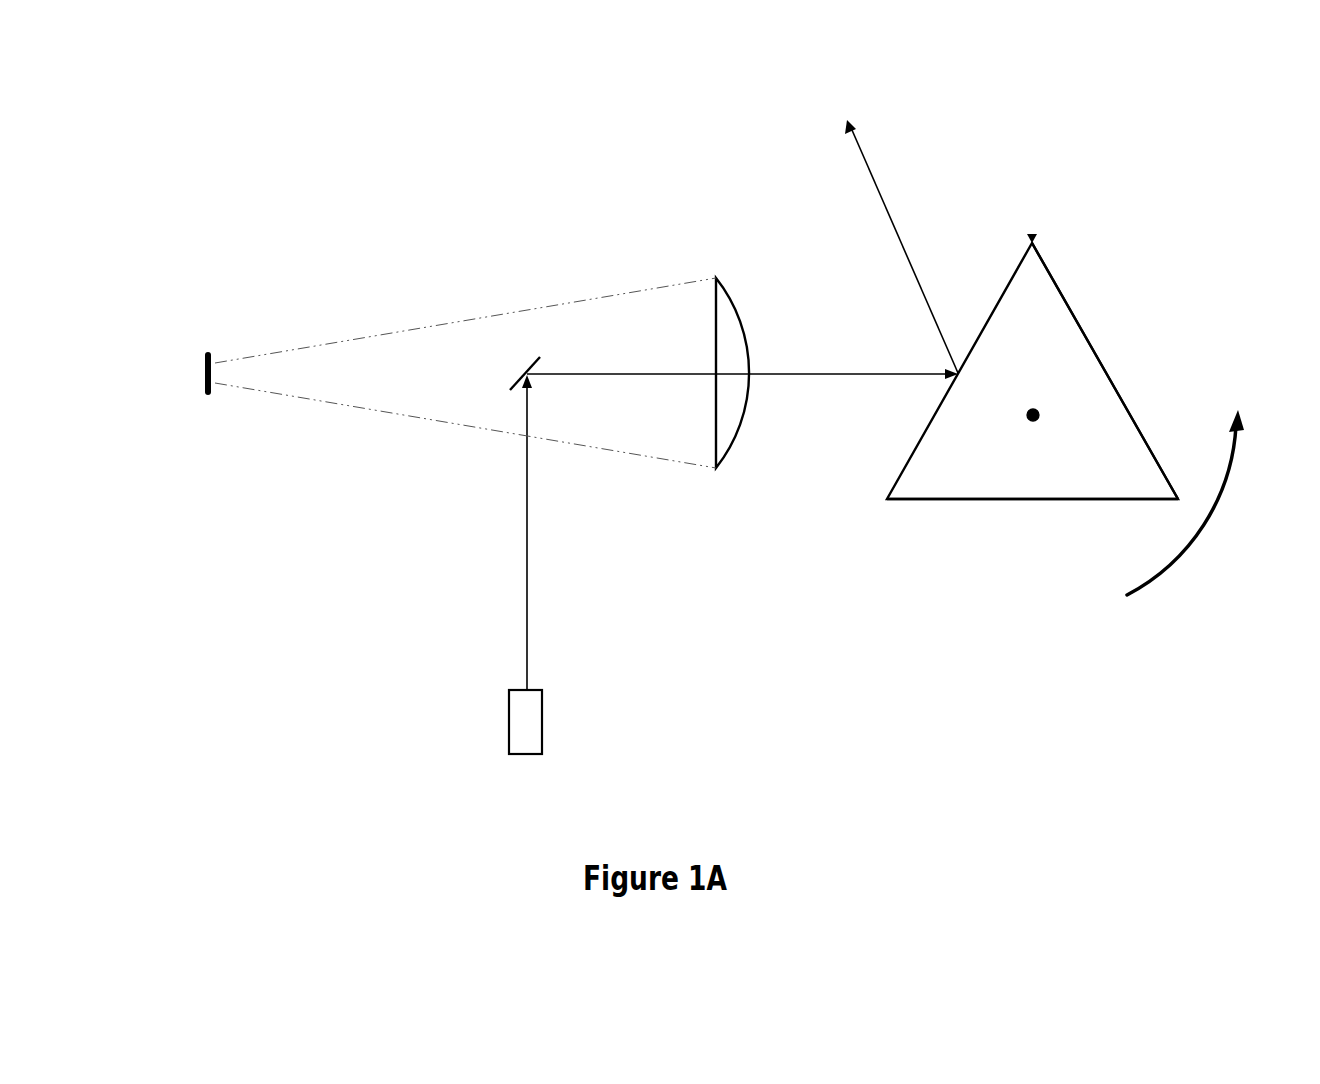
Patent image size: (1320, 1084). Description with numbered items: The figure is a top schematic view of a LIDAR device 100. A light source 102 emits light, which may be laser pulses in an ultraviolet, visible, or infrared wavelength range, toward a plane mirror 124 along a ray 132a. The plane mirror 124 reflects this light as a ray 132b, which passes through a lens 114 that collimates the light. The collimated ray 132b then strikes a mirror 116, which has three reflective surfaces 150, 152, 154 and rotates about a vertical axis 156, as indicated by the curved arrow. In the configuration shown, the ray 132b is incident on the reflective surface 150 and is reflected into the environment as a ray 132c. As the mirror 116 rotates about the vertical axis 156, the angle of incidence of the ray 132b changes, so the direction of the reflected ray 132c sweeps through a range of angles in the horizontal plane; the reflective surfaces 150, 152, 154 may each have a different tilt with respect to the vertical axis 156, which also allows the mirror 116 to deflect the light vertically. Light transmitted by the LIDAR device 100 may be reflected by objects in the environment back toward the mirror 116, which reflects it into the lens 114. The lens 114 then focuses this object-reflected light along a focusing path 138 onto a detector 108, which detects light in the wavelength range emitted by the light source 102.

The LIDAR device 100 is at (1050, 748).
The light source 102 is at (508, 723).
The detector 108 is at (203, 373).
The lens 114 is at (715, 438).
The mirror 116 is at (1032, 246).
The plane mirror 124 is at (533, 358).
The ray 132a is at (523, 468).
The ray 132b is at (588, 372).
The ray 132c is at (893, 217).
The focusing path 138 is at (463, 320).
The reflective surface 150 is at (893, 482).
The reflective surface 152 is at (1032, 502).
The reflective surface 154 is at (1108, 372).
The vertical axis 156 is at (1033, 422).